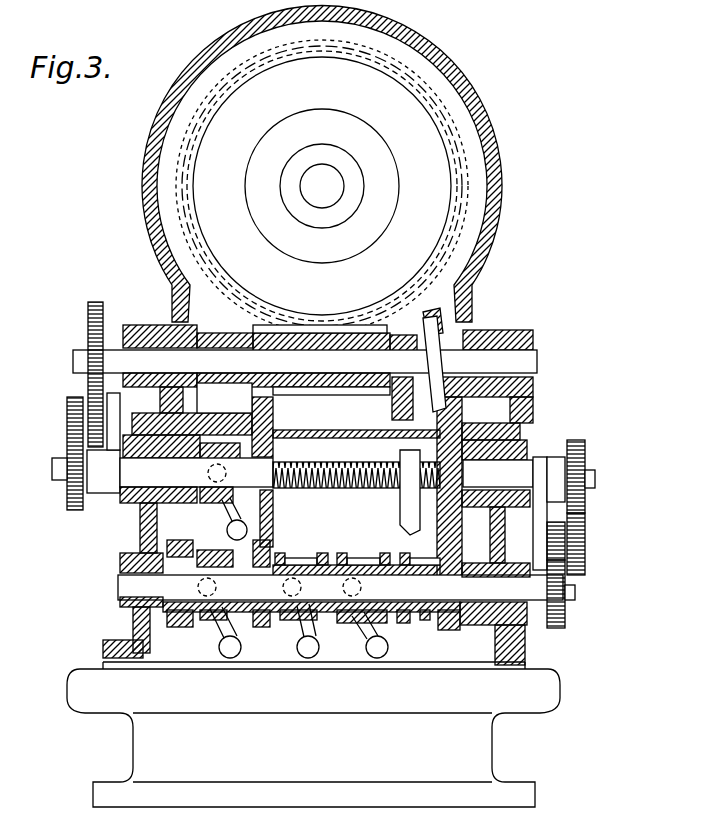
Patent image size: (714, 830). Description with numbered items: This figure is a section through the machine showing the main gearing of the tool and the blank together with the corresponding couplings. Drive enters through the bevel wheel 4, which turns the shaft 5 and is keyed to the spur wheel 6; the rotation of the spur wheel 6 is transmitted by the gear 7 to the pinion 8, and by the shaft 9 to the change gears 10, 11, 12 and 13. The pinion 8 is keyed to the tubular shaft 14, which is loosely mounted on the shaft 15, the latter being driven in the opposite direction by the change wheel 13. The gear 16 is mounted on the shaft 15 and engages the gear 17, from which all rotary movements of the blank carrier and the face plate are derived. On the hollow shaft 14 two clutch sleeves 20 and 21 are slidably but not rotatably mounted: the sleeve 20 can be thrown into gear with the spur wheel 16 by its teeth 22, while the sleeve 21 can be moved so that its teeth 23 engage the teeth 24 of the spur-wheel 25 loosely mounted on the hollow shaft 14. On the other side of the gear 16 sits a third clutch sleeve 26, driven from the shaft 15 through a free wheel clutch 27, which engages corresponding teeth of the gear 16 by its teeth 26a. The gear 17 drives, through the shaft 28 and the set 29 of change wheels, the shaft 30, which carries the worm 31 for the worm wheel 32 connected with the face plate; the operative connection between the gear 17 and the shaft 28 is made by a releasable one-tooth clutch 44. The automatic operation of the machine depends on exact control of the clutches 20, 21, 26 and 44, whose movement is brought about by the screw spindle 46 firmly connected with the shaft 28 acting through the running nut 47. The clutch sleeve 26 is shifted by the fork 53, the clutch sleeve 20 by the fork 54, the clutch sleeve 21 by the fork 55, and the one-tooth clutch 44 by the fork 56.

The bevel wheel 4 is at (425, 330).
The shaft 5 is at (537, 362).
The spur wheel 6 is at (441, 322).
The gear 7 is at (460, 420).
The pinion 8 is at (450, 612).
The shaft 9 is at (516, 470).
The change gear 10 is at (578, 470).
The change gear 11 is at (580, 550).
The change gear 12 is at (552, 545).
The change gear 13 is at (555, 601).
The tubular shaft 14 is at (330, 565).
The shaft 15 is at (422, 602).
The gear 16 is at (266, 630).
The gear 17 is at (266, 522).
The clutch sleeve 20 is at (300, 560).
The clutch sleeve 21 is at (356, 565).
The teeth 22 is at (279, 562).
The teeth 23 is at (383, 562).
The teeth 24 is at (410, 562).
The spur-wheel 25 is at (427, 565).
The clutch sleeve 26 is at (227, 532).
The teeth 26a is at (236, 622).
The free wheel clutch 27 is at (165, 542).
The shaft 28 is at (140, 478).
The set of change wheels 29 is at (74, 470).
The shaft 30 is at (98, 330).
The worm 31 is at (238, 340).
The worm wheel 32 is at (182, 188).
The one-tooth clutch 44 is at (205, 445).
The screw spindle 46 is at (358, 470).
The running nut 47 is at (412, 490).
The fork 53 is at (214, 616).
The fork 54 is at (298, 615).
The fork 55 is at (368, 620).
The fork 56 is at (232, 495).